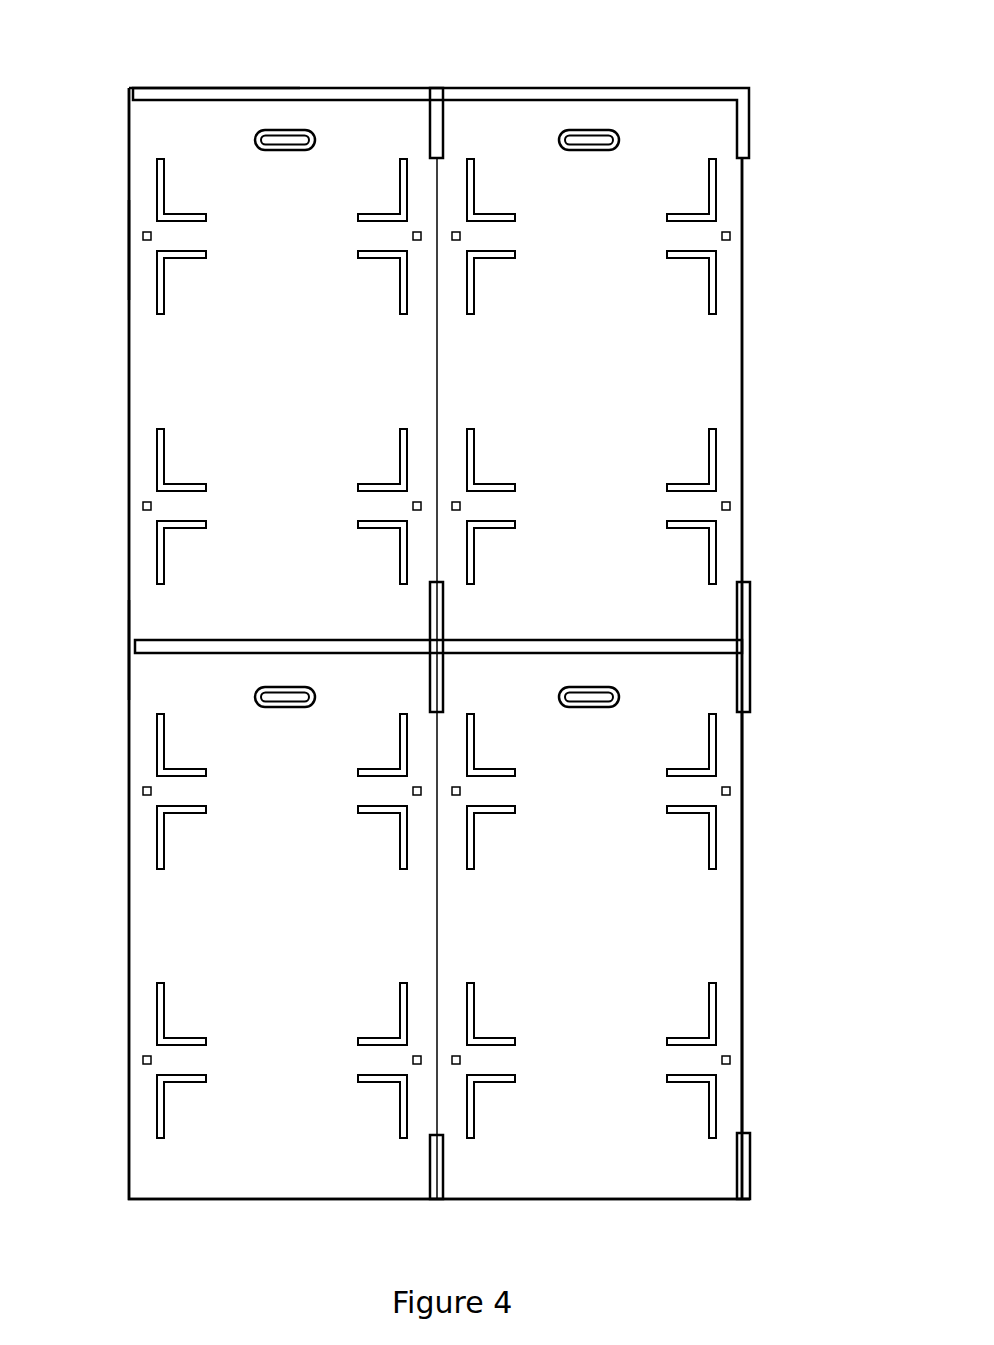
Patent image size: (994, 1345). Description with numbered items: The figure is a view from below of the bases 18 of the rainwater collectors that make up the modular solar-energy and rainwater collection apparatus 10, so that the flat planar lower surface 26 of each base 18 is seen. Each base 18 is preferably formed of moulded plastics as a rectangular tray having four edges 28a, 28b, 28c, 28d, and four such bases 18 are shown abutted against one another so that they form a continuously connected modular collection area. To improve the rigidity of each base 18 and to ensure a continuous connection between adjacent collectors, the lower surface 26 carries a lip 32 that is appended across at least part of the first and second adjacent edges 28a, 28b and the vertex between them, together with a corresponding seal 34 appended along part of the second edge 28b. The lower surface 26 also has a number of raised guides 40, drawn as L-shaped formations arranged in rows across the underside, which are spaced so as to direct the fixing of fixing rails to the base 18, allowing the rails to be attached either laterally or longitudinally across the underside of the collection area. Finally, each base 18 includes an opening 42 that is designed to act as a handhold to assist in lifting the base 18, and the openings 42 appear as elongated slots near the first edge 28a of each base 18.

The modular solar-energy and rainwater collection apparatus 10 is at (153, 34).
The base 18 is at (232, 86).
The lower surface 26 is at (415, 661).
The first edge 28a is at (128, 88).
The second edge 28b is at (436, 193).
The third edge 28c is at (127, 641).
The fourth edge 28d is at (128, 240).
The lip 32 is at (183, 87).
The seal 34 is at (446, 621).
The raised guide 40 is at (156, 192).
The opening 42 is at (284, 137).